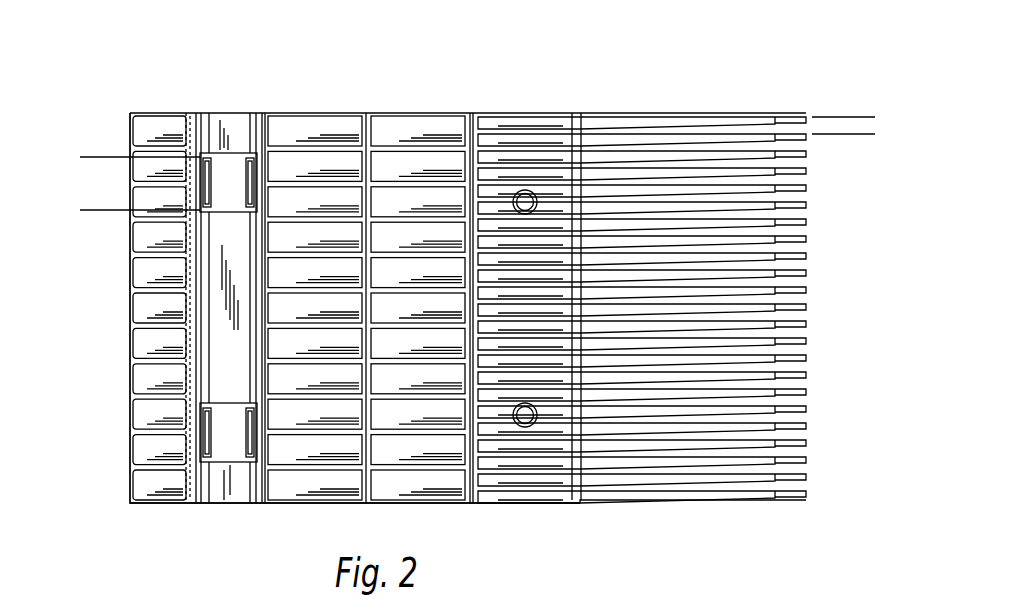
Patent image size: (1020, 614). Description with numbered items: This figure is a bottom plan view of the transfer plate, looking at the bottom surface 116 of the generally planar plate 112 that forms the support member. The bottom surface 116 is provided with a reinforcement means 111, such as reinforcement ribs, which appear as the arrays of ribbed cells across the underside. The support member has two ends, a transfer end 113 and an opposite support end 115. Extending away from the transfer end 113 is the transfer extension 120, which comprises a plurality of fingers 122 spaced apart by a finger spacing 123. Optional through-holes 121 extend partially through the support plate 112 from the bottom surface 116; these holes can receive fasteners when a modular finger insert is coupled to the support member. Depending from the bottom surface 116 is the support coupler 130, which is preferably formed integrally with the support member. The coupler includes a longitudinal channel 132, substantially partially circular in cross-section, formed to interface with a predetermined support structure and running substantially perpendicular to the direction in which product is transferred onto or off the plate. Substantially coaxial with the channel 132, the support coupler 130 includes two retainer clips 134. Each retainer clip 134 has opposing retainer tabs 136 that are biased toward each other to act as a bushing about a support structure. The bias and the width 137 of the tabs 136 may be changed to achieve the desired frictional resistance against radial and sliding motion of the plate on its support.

The reinforcement means 111 is at (395, 148).
The plate 112 is at (119, 308).
The transfer end 113 is at (672, 302).
The support end 115 is at (113, 462).
The bottom surface 116 is at (145, 377).
The transfer extension 120 is at (670, 160).
The through-holes 121 is at (525, 190).
The fingers 122 is at (748, 470).
The finger spacing 123 is at (852, 170).
The support coupler 130 is at (175, 306).
The longitudinal channel 132 is at (214, 122).
The retainer clips 134 is at (175, 306).
The retainer tabs 136 is at (250, 455).
The width 137 is at (97, 128).